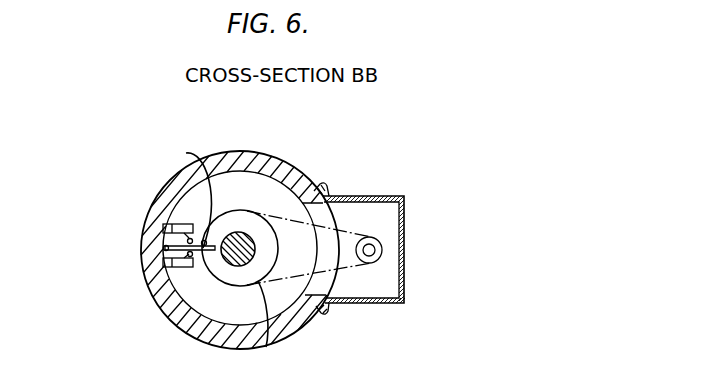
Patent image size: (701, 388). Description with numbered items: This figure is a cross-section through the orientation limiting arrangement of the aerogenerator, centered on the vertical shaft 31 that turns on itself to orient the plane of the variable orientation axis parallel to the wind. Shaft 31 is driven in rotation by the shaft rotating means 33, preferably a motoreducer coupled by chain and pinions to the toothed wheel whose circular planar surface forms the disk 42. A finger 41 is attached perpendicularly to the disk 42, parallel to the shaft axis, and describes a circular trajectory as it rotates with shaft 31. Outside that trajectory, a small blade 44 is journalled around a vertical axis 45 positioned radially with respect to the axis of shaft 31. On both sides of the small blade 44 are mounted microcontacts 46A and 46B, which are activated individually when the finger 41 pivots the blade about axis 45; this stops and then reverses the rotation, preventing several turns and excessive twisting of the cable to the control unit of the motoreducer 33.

The vertical shaft 31 is at (249, 240).
The shaft rotating means 33 is at (412, 259).
The finger 41 is at (186, 153).
The disk 42 is at (266, 347).
The small blade 44 is at (185, 317).
The vertical axis 45 is at (163, 249).
The microcontact 46A is at (180, 224).
The microcontact 46B is at (168, 268).